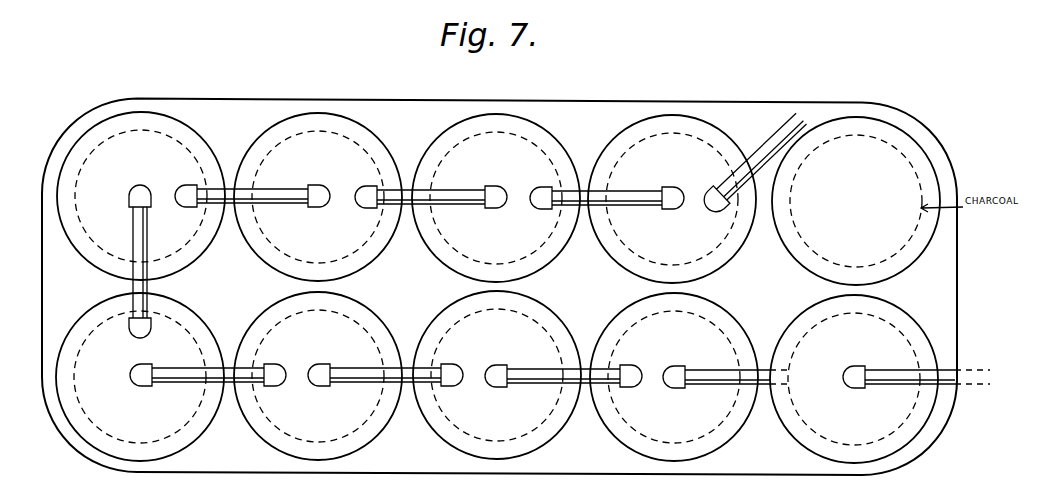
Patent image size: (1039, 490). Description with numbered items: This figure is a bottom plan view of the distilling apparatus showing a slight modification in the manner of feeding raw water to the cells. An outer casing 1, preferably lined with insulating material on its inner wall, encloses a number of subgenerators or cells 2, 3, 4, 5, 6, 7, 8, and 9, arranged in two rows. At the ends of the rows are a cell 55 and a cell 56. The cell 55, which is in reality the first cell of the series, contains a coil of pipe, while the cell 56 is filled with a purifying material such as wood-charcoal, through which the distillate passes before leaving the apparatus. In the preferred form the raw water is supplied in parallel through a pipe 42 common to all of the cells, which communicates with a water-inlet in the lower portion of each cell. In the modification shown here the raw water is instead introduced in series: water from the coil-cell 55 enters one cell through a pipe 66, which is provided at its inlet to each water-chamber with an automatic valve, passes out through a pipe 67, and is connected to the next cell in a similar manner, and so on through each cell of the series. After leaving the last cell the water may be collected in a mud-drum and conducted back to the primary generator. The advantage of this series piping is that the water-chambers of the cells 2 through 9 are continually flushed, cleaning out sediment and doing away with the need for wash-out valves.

The outer casing 1 is at (482, 287).
The cell 2 is at (672, 199).
The cell 3 is at (496, 198).
The cell 4 is at (318, 197).
The cell 5 is at (141, 196).
The cell 6 is at (140, 377).
The cell 7 is at (318, 376).
The cell 8 is at (497, 375).
The cell 9 is at (674, 377).
The coil-cell 55 is at (854, 379).
The charcoal cell 56 is at (856, 201).
The pipe 66 is at (703, 372).
The pipe 67 is at (527, 368).
The pipe 42 is at (960, 372).